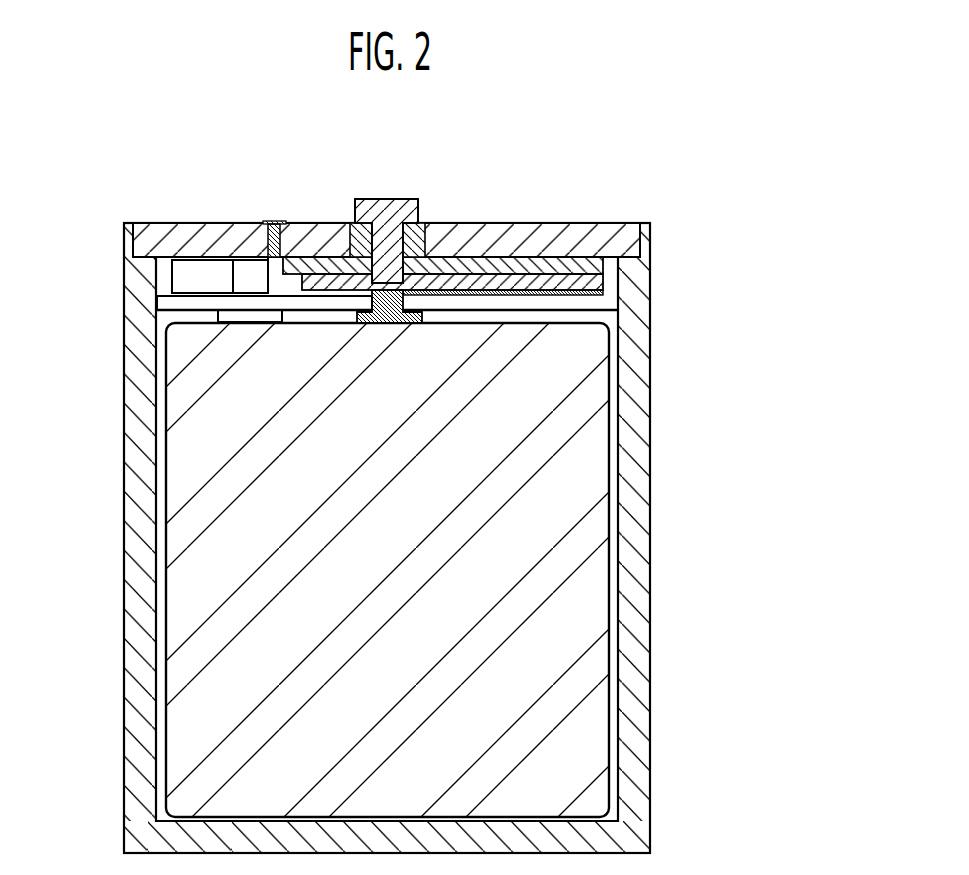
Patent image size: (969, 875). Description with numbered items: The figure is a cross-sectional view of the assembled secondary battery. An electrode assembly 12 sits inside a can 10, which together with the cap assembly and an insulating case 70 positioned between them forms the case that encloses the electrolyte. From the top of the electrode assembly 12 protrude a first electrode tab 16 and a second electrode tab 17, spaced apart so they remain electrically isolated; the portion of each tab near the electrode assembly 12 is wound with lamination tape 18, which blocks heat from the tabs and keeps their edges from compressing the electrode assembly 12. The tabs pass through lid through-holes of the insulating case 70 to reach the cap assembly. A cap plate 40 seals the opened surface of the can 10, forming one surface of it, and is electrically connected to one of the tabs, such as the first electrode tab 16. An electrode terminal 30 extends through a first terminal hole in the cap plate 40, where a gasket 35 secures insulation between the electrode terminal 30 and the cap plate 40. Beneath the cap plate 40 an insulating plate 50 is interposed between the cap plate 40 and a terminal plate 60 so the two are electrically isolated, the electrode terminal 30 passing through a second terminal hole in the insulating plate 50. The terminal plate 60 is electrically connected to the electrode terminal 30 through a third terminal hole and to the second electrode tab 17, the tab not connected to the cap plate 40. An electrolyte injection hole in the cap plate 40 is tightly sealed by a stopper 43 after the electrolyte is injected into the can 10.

The can 10 is at (645, 626).
The electrode assembly 12 is at (580, 560).
The first electrode tab 16 is at (175, 304).
The second electrode tab 17 is at (403, 305).
The lamination tape 18 is at (418, 318).
The electrode terminal 30 is at (388, 203).
The gasket 35 is at (352, 243).
The cap plate 40 is at (623, 240).
The stopper 43 is at (275, 222).
The insulating plate 50 is at (477, 268).
The terminal plate 60 is at (558, 283).
The insulating case 70 is at (245, 283).